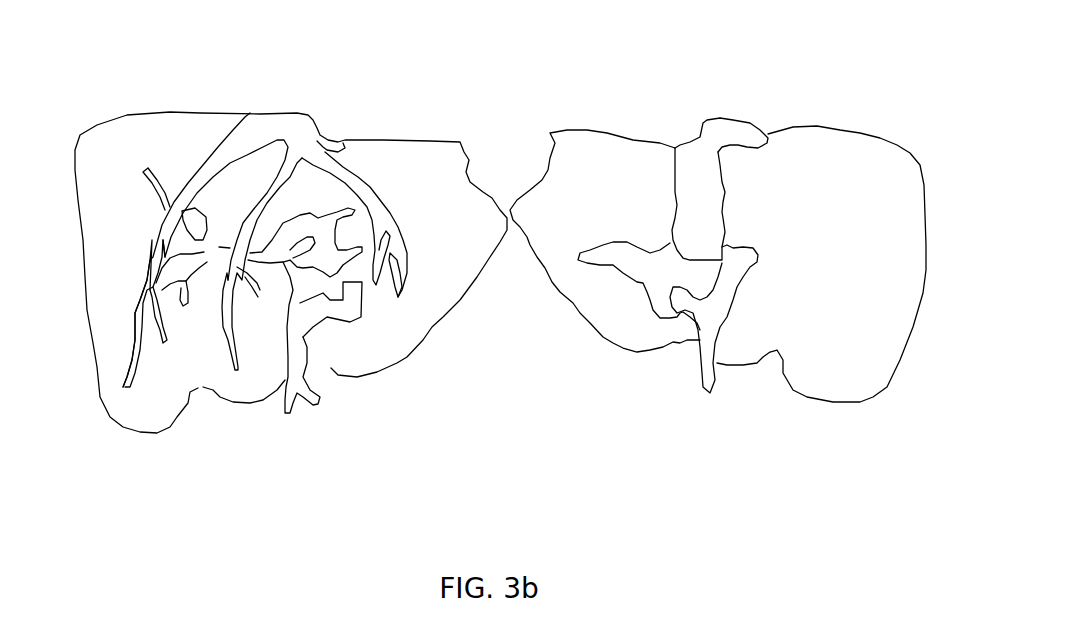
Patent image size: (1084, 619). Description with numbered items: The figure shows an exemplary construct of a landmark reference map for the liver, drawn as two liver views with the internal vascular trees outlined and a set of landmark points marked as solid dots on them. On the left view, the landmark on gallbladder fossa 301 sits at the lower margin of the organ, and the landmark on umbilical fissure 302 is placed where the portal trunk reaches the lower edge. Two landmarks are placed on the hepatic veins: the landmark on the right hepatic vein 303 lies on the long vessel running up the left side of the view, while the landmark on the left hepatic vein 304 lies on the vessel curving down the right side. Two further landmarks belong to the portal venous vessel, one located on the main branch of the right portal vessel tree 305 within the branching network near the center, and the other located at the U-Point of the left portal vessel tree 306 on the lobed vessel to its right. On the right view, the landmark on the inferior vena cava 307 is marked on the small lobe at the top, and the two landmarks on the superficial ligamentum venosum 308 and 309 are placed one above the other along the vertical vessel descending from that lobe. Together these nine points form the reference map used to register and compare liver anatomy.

The landmark on gallbladder fossa 301 is at (197, 395).
The landmark on umbilical fissure 302 is at (327, 390).
The landmark on right hepatic vein 303 is at (141, 255).
The landmark on left hepatic vein 304 is at (363, 175).
The landmark on main branch of right portal vessel tree 305 is at (212, 234).
The landmark at U-Point of left portal vessel tree 306 is at (320, 210).
The landmark on inferior vena cava 307 is at (735, 118).
The landmark on superficial ligamentum venosum 308 is at (673, 165).
The landmark on superficial ligamentum venosum 309 is at (669, 241).